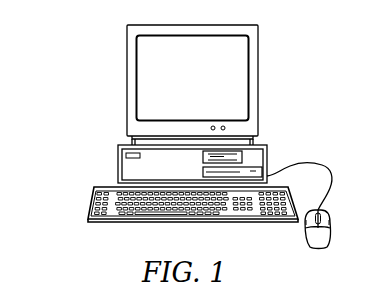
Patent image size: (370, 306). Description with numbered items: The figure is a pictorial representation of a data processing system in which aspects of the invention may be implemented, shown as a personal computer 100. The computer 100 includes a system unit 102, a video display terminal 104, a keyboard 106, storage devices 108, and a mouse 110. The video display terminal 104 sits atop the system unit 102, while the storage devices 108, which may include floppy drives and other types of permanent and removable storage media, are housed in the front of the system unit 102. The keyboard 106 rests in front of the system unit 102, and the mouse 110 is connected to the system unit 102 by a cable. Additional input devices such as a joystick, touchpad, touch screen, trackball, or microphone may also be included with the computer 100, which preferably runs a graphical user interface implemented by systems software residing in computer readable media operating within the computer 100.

The computer 100 is at (66, 64).
The system unit 102 is at (179, 152).
The video display terminal 104 is at (258, 81).
The keyboard 106 is at (112, 224).
The storage devices 108 is at (243, 161).
The mouse 110 is at (318, 248).